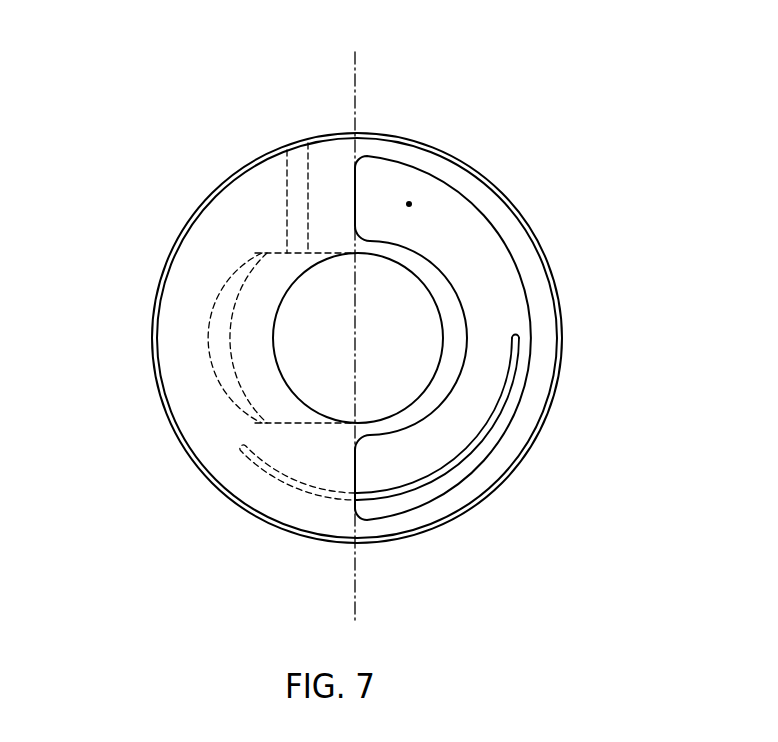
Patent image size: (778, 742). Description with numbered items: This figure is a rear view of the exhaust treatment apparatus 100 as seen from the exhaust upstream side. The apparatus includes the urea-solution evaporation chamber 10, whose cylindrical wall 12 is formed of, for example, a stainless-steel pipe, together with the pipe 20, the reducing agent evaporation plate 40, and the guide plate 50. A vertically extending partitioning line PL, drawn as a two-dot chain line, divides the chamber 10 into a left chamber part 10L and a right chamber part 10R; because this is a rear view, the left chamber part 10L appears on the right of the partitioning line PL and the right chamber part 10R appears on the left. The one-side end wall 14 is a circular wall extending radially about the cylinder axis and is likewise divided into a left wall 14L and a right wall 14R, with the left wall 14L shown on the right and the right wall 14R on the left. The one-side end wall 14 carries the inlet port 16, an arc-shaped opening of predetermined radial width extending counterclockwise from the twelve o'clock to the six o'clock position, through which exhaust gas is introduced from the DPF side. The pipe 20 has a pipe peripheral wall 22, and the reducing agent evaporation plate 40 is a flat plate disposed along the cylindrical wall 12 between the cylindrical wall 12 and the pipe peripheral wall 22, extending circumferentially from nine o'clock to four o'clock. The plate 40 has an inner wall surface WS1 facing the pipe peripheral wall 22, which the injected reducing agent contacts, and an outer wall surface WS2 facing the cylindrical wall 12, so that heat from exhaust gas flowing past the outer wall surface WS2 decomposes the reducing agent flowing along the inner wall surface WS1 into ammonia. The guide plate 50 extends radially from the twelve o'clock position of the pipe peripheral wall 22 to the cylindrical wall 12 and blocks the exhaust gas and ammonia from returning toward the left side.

The exhaust treatment apparatus 100 is at (497, 114).
The urea-solution evaporation chamber 10 is at (463, 249).
The left chamber part 10L is at (484, 192).
The right chamber part 10R is at (217, 225).
The cylindrical wall 12 is at (254, 164).
The one-side end wall 14 is at (155, 338).
The left wall 14L is at (542, 275).
The right wall 14R is at (192, 337).
The inlet port 16 is at (410, 203).
The pipe 20 is at (155, 339).
The pipe peripheral wall 22 is at (213, 376).
The reducing agent evaporation plate 40 is at (438, 462).
The guide plate 50 is at (336, 157).
The inner wall surface WS1 is at (500, 380).
The outer wall surface WS2 is at (491, 432).
The partitioning line PL is at (357, 79).